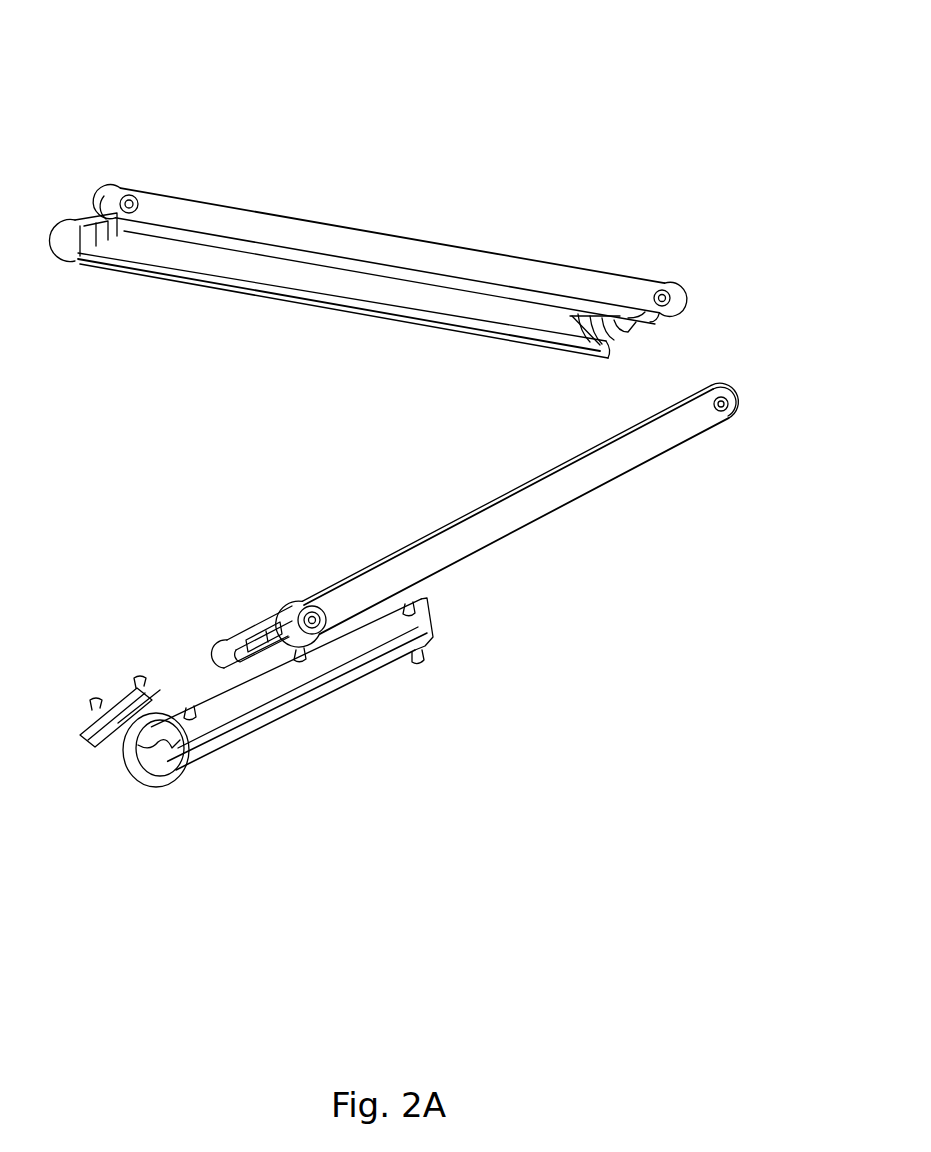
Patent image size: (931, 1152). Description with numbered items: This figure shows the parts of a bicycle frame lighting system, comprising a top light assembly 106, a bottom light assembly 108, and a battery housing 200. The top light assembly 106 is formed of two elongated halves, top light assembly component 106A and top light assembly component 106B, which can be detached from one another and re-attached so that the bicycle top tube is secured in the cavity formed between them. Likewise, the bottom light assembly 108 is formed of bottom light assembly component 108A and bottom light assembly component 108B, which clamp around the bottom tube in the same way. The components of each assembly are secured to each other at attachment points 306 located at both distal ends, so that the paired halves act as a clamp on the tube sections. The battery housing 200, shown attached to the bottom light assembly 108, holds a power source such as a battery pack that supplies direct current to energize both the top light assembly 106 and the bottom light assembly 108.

The top light assembly 106 is at (343, 226).
The top light assembly component 106A is at (465, 262).
The top light assembly component 106B is at (222, 263).
The bottom light assembly 108 is at (540, 528).
The bottom light assembly component 108A is at (597, 470).
The bottom light assembly component 108B is at (258, 630).
The battery housing 200 is at (253, 707).
The attachment points 306 is at (130, 203).